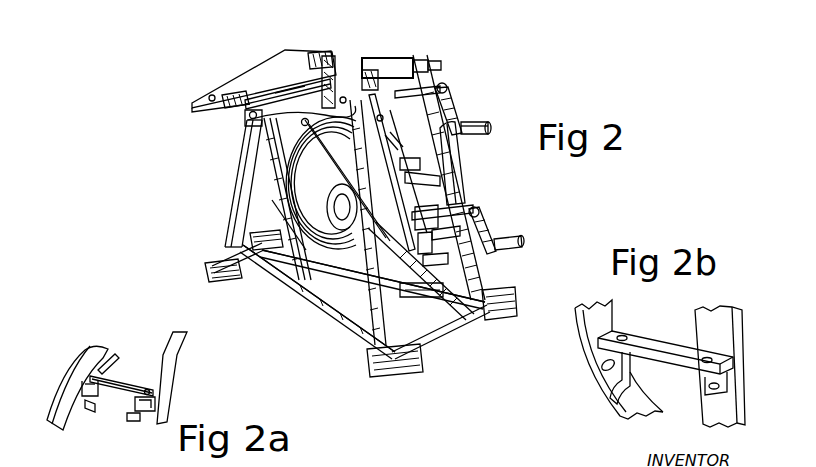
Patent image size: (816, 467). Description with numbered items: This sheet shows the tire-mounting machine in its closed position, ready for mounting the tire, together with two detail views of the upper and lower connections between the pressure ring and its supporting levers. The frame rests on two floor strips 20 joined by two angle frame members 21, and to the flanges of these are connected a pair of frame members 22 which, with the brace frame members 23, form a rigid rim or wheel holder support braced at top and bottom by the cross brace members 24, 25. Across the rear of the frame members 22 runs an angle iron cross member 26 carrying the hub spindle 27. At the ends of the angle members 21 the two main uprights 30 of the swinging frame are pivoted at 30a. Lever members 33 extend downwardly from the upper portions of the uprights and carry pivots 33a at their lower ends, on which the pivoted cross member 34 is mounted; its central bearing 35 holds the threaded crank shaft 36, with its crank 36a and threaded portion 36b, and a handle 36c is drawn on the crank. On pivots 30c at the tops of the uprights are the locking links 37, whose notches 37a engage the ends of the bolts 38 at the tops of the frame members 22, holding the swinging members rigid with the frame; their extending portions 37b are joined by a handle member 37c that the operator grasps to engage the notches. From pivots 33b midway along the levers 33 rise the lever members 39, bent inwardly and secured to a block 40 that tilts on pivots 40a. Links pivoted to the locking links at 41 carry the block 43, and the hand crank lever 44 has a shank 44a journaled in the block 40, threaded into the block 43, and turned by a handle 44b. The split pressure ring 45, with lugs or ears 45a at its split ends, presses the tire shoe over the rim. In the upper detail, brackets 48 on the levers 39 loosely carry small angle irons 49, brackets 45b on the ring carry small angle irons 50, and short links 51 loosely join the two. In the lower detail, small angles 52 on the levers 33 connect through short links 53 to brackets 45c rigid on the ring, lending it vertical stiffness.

In FIG. 2, the floor strips 20 is at (208, 270).
In FIG. 2, the frame members 21 is at (393, 285).
In FIG. 2, the frame members 22 is at (332, 70).
In FIG. 2, the brace frame members 23 is at (247, 150).
In FIG. 2, the cross brace member 24 is at (269, 81).
In FIG. 2, the cross brace member 25 is at (285, 287).
In FIG. 2, the angle iron cross member 26 is at (271, 206).
In FIG. 2, the hub spindle 27 is at (430, 127).
In FIG. 2, the main uprights 30 is at (267, 271).
In FIG. 2, the pivots 30a is at (403, 348).
In FIG. 2, the pivots 30c is at (414, 60).
In FIG. 2, the lever members 33 is at (397, 281).
In FIG. 2B, the lever members 33 is at (723, 321).
In FIG. 2, the pivots 33a is at (427, 212).
In FIG. 2, the pivots 33b is at (423, 181).
In FIG. 2, the pivoted cross member 34 is at (428, 243).
In FIG. 2, the bearing 35 is at (462, 190).
In FIG. 2, the threaded crank shaft 36 is at (446, 241).
In FIG. 2, the crank 36a is at (488, 211).
In FIG. 2, the threaded portion 36b is at (439, 262).
In FIG. 2, the crank handle 36c is at (513, 247).
In FIG. 2, the locking links 37 is at (383, 57).
In FIG. 2, the notches 37a is at (300, 96).
In FIG. 2, the extending portions 37b is at (319, 53).
In FIG. 2, the handle member 37c is at (255, 76).
In FIG. 2, the bolts 38 is at (246, 121).
In FIG. 2, the lever members 39 is at (444, 93).
In FIG. 2A, the lever members 39 is at (165, 381).
In FIG. 2, the block 40 is at (402, 58).
In FIG. 2, the pivots 40a is at (436, 61).
In FIG. 2, the pivot 41 is at (304, 126).
In FIG. 2, the block 43 is at (374, 69).
In FIG. 2, the hand crank lever 44 is at (455, 97).
In FIG. 2, the shank 44a is at (428, 85).
In FIG. 2, the handle 44b is at (478, 130).
In FIG. 2, the pressure ring 45 is at (450, 178).
In FIG. 2A, the pressure ring 45 is at (62, 392).
In FIG. 2B, the pressure ring 45 is at (577, 334).
In FIG. 2, the lugs or ears 45a is at (387, 138).
In FIG. 2A, the brackets 45b is at (107, 364).
In FIG. 2B, the brackets 45c is at (630, 382).
In FIG. 2A, the brackets 48 is at (150, 413).
In FIG. 2A, the small angle irons 49 is at (133, 421).
In FIG. 2A, the small angle irons 50 is at (87, 400).
In FIG. 2A, the short links 51 is at (123, 384).
In FIG. 2B, the small angles 52 is at (728, 388).
In FIG. 2B, the short links 53 is at (675, 356).